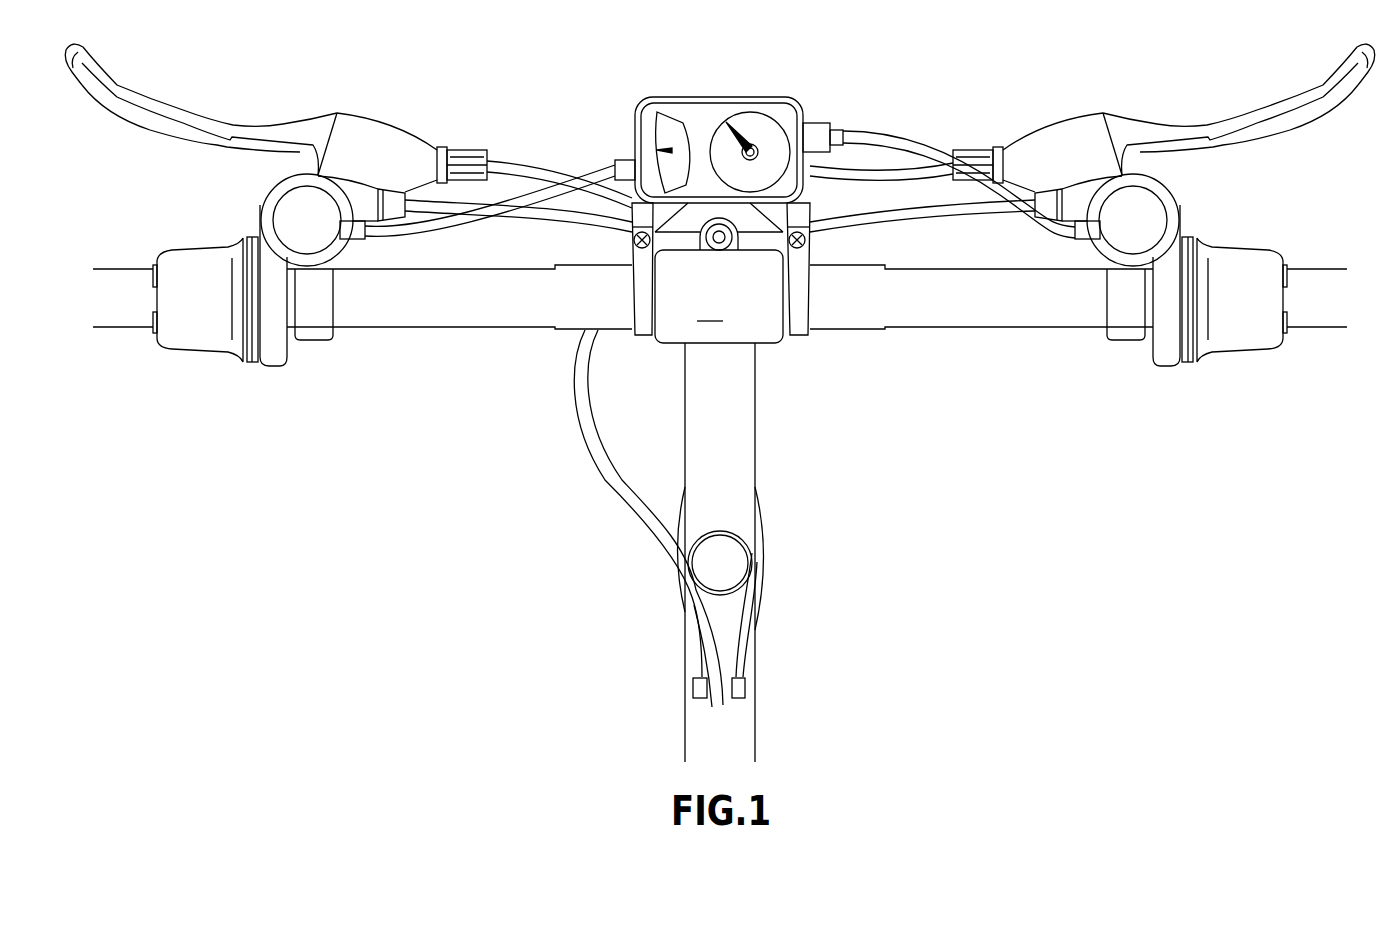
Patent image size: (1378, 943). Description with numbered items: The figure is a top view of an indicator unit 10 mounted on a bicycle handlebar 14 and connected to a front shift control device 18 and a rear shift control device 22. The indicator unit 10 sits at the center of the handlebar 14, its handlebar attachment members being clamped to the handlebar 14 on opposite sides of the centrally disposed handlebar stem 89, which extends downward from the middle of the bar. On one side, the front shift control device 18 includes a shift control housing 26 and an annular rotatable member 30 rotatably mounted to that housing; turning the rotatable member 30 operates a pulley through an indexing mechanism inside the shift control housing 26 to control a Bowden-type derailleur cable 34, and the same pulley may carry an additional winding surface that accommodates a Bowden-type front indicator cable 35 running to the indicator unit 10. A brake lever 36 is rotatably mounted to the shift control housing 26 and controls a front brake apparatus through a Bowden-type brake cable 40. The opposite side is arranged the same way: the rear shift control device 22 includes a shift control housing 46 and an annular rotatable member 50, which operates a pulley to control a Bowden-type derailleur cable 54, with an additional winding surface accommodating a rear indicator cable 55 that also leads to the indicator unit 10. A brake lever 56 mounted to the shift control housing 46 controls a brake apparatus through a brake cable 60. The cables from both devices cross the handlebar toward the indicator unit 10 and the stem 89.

The indicator unit 10 is at (682, 78).
The bicycle handlebar 14 is at (864, 336).
The front shift control device 18 is at (189, 371).
The rear shift control device 22 is at (1253, 355).
The shift control housing 26 is at (261, 213).
The annular rotatable member 30 is at (172, 260).
The derailleur cable 34 is at (565, 213).
The front indicator cable 35 is at (420, 229).
The brake lever 36 is at (237, 126).
The brake cable 40 is at (527, 168).
The shift control housing 46 is at (1158, 357).
The annular rotatable member 50 is at (1227, 250).
The derailleur cable 54 is at (905, 207).
The rear indicator cable 55 is at (870, 138).
The brake lever 56 is at (1147, 128).
The brake cable 60 is at (860, 177).
The handlebar stem 89 is at (692, 482).